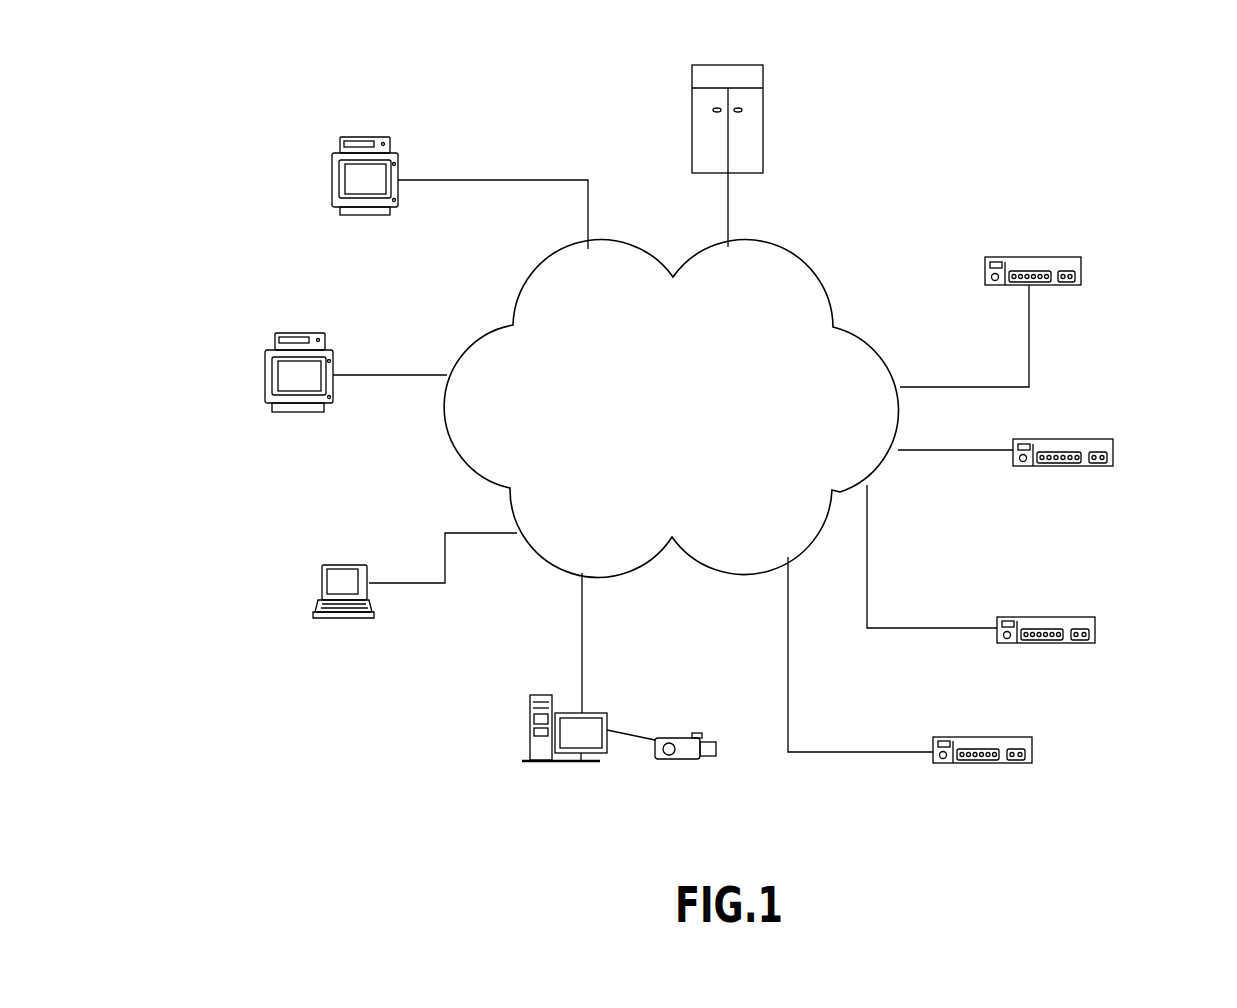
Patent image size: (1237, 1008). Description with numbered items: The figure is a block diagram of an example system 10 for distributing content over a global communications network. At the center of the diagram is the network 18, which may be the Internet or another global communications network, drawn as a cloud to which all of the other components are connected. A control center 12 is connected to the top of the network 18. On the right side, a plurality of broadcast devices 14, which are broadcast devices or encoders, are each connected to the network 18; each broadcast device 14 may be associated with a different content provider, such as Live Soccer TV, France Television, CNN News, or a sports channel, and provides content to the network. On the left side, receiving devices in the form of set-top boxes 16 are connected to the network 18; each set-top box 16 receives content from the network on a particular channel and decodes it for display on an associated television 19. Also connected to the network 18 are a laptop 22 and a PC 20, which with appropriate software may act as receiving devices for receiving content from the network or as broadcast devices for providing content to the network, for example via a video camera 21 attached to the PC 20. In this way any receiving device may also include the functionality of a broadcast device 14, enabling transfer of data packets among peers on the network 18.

The system 10 is at (512, 48).
The control center 12 is at (733, 101).
The broadcast device 14 is at (1031, 514).
The set-top box 16 is at (335, 227).
The network 18 is at (635, 572).
The television 19 is at (321, 301).
The PC 20 is at (550, 708).
The video camera 21 is at (691, 768).
The laptop 22 is at (349, 612).